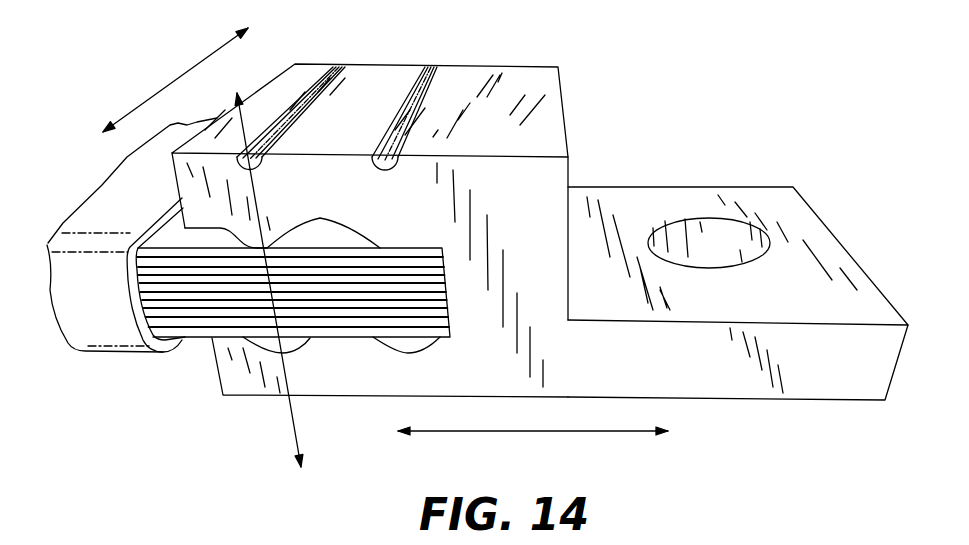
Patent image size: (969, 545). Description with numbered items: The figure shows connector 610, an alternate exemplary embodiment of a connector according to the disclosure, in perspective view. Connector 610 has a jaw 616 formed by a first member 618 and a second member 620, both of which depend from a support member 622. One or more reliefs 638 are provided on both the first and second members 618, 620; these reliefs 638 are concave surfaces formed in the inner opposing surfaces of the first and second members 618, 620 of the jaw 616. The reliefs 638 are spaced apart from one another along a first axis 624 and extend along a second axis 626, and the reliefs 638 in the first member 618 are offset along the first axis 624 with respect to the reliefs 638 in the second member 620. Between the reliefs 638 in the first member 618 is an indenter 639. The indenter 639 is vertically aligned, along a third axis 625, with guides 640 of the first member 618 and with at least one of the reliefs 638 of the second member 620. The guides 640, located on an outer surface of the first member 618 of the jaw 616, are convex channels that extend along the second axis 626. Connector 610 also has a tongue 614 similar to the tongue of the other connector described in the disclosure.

The connector 610 is at (728, 68).
The tongue 614 is at (857, 365).
The jaw 616 is at (82, 180).
The first member 618 is at (187, 180).
The second member 620 is at (230, 370).
The support member 622 is at (540, 267).
The first axis 624 is at (533, 446).
The third axis 625 is at (269, 280).
The second axis 626 is at (175, 80).
The reliefs 638 is at (200, 227).
The indenter 639 is at (284, 232).
The guides 640 is at (345, 72).